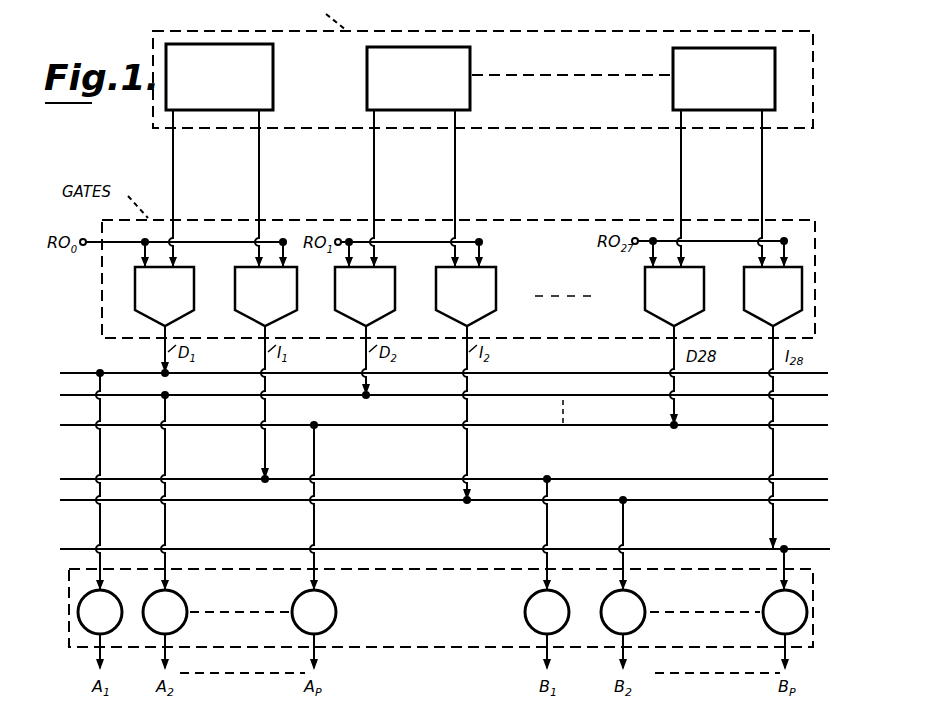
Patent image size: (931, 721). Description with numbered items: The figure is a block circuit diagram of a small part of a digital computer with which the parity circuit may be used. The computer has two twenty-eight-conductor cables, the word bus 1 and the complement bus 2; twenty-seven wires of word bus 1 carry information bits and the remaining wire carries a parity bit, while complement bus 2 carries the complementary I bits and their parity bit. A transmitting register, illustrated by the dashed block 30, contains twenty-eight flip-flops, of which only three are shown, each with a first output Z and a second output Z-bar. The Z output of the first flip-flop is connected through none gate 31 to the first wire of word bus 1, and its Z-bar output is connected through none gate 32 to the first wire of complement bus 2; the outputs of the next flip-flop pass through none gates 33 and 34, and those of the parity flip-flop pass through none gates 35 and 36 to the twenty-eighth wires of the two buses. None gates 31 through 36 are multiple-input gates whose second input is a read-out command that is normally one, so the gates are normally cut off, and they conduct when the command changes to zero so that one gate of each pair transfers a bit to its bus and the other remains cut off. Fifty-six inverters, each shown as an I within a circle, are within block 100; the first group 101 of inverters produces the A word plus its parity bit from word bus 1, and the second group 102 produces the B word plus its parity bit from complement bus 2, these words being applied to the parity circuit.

The register 30 is at (577, 30).
The none gate 31 is at (195, 300).
The none gate 32 is at (298, 300).
The none gate 33 is at (396, 300).
The none gate 34 is at (497, 300).
The none gate 35 is at (644, 296).
The none gate 36 is at (744, 287).
The word bus 1 is at (483, 428).
The complement bus 2 is at (497, 467).
The inverters block 100 is at (356, 649).
The first group of inverters 101 is at (75, 590).
The second group of inverters 102 is at (522, 590).